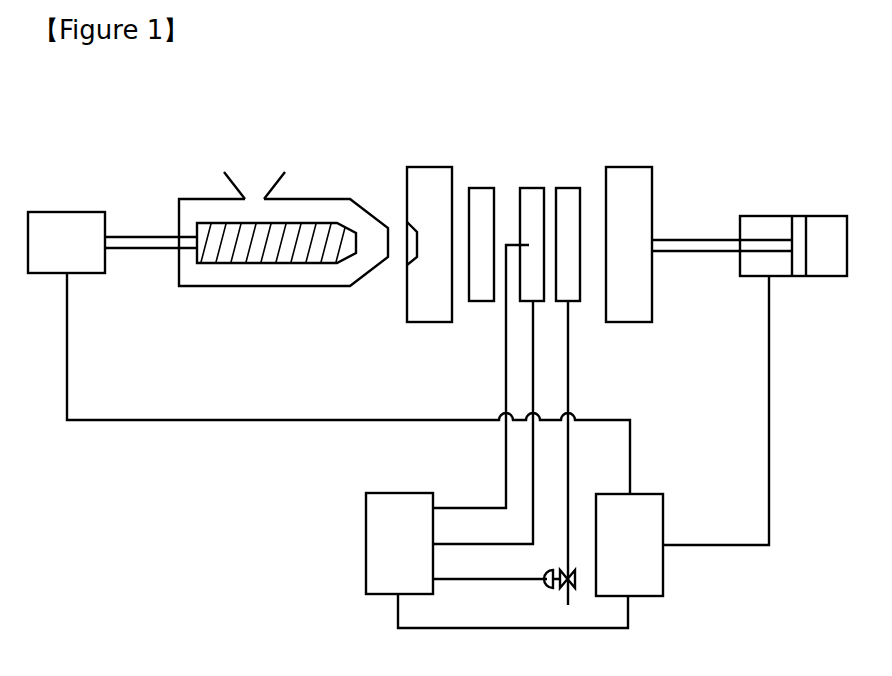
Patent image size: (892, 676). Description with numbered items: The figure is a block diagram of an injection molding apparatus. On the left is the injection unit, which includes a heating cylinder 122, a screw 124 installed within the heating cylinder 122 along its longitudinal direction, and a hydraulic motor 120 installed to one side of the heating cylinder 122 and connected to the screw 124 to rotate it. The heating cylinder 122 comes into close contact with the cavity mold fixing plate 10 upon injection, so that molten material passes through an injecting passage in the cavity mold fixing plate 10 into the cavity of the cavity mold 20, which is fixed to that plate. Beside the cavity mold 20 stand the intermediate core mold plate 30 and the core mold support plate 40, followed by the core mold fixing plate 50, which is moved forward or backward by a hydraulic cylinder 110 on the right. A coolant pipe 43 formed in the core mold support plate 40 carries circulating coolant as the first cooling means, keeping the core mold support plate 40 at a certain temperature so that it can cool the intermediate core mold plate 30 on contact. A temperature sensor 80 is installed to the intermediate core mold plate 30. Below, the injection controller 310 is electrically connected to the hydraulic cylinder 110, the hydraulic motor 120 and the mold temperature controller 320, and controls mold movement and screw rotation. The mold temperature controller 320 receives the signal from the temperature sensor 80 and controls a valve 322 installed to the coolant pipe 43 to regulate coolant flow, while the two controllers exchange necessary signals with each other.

The cavity mold fixing plate 10 is at (430, 167).
The cavity mold 20 is at (483, 188).
The intermediate core mold plate 30 is at (533, 188).
The core mold support plate 40 is at (568, 188).
The coolant pipe 43 is at (572, 362).
The core mold fixing plate 50 is at (625, 167).
The temperature sensor 80 is at (527, 248).
The hydraulic cylinder 110 is at (803, 215).
The hydraulic motor 120 is at (68, 210).
The heating cylinder 122 is at (213, 197).
The screw 124 is at (235, 264).
The injection controller 310 is at (663, 578).
The mold temperature controller 320 is at (366, 542).
The valve 322 is at (572, 592).